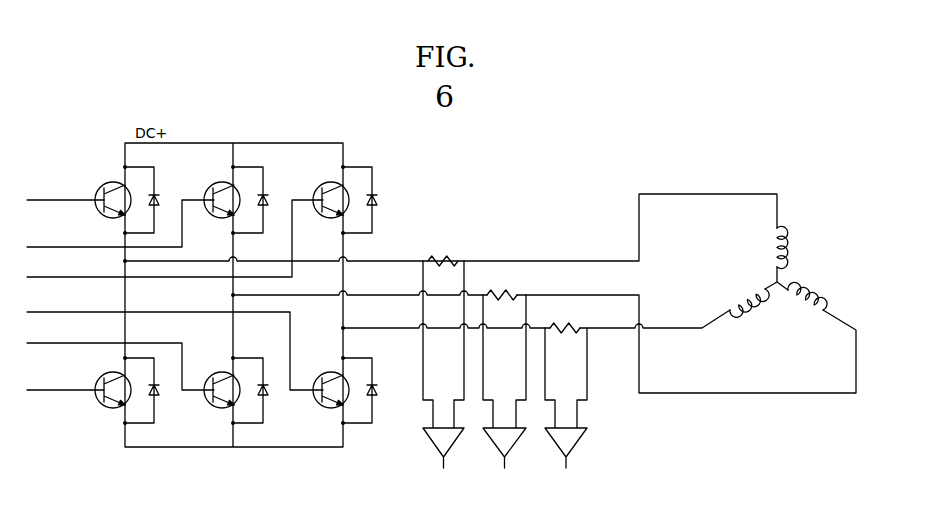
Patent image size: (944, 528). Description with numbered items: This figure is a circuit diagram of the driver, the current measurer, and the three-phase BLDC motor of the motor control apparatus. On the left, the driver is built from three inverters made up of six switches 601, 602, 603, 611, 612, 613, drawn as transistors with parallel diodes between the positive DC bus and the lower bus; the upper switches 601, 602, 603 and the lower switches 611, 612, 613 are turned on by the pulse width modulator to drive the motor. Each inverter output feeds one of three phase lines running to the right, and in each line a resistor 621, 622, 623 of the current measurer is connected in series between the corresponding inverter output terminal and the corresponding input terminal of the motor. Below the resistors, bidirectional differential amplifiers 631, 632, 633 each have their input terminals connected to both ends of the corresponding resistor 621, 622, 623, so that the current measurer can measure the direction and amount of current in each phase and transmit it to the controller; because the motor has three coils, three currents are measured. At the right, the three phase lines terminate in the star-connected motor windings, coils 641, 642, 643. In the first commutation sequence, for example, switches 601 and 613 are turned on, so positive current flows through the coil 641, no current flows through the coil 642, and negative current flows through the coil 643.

The switch 601 is at (106, 183).
The switch 602 is at (215, 183).
The switch 603 is at (325, 183).
The switch 611 is at (110, 407).
The switch 612 is at (219, 407).
The switch 613 is at (329, 407).
The resistor 621 is at (461, 250).
The resistor 622 is at (520, 284).
The resistor 623 is at (583, 318).
The bidirectional differential amplifier 631 is at (431, 443).
The bidirectional differential amplifier 632 is at (493, 443).
The bidirectional differential amplifier 633 is at (554, 443).
The coil 641 is at (781, 232).
The coil 642 is at (818, 303).
The coil 643 is at (737, 296).